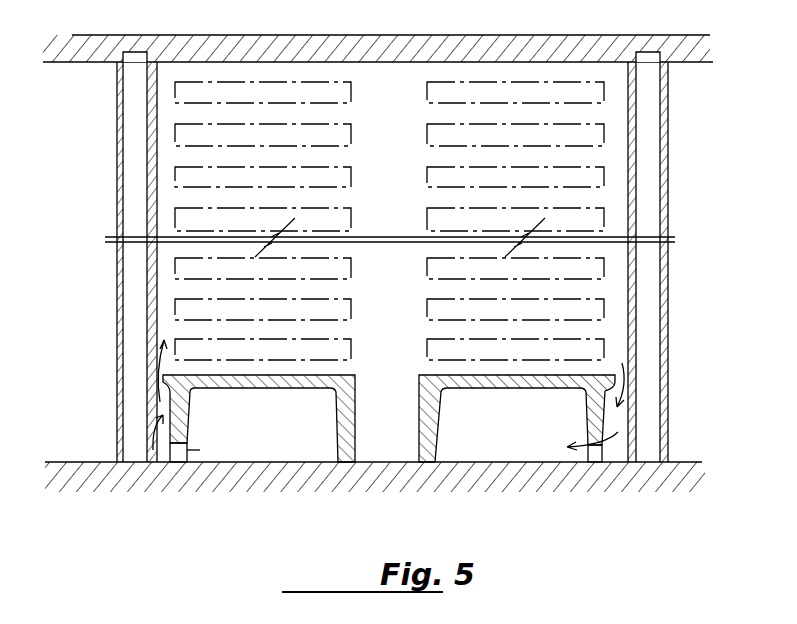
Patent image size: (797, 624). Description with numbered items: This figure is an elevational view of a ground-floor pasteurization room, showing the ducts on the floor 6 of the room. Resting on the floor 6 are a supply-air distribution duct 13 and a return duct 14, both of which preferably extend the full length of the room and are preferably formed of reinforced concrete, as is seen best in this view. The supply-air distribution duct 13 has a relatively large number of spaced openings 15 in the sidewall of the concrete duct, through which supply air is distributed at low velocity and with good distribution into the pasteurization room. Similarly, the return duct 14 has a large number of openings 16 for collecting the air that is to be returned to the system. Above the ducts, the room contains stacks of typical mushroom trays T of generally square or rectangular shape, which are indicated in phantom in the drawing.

The mushroom trays T is at (446, 89).
The floor 6 is at (387, 462).
The supply-air distribution duct 13 is at (354, 393).
The return duct 14 is at (427, 440).
The openings 15 is at (183, 462).
The openings 16 is at (603, 457).